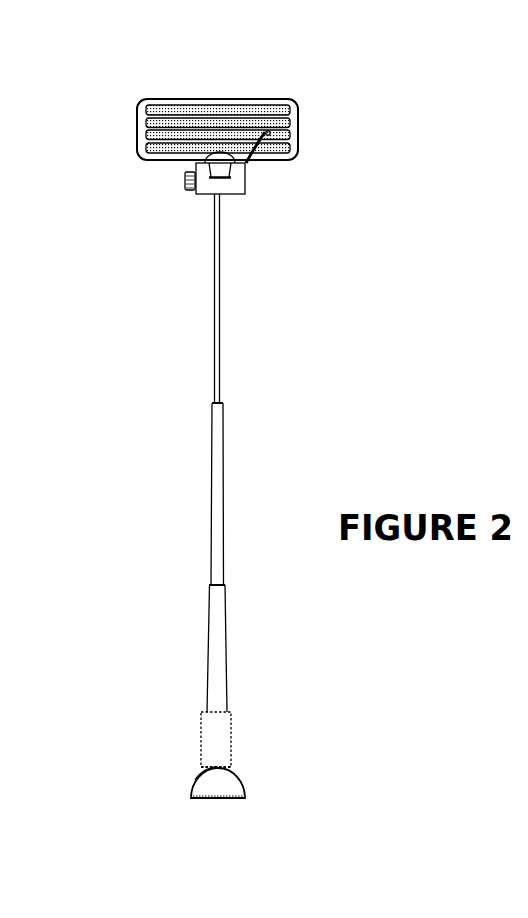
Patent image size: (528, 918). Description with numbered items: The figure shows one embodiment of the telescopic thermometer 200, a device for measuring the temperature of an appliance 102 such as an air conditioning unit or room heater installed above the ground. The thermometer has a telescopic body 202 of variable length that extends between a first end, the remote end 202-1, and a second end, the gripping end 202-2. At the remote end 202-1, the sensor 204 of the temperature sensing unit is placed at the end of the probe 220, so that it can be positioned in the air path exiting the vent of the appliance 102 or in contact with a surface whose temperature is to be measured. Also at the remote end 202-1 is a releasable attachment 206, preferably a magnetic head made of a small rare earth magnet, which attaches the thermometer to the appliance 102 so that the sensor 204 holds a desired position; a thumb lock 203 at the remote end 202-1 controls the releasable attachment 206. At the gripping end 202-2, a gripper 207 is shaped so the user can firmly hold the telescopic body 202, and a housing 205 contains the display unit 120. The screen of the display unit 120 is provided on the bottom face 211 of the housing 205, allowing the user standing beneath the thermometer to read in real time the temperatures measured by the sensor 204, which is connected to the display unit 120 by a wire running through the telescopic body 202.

The appliance 102 is at (137, 125).
The sensor 204 is at (290, 156).
The probe 220 is at (256, 134).
The releasable attachment 206 is at (227, 168).
The telescopic thermometer 200 is at (170, 351).
The adjustment knob 203 is at (185, 180).
The remote end 202-1 is at (240, 225).
The telescopic body 202 is at (212, 430).
The gripping end 202-2 is at (245, 753).
The gripper 207 is at (201, 728).
The housing 205 is at (197, 771).
The display unit 120 is at (190, 790).
The base bottom surface 211 is at (216, 799).